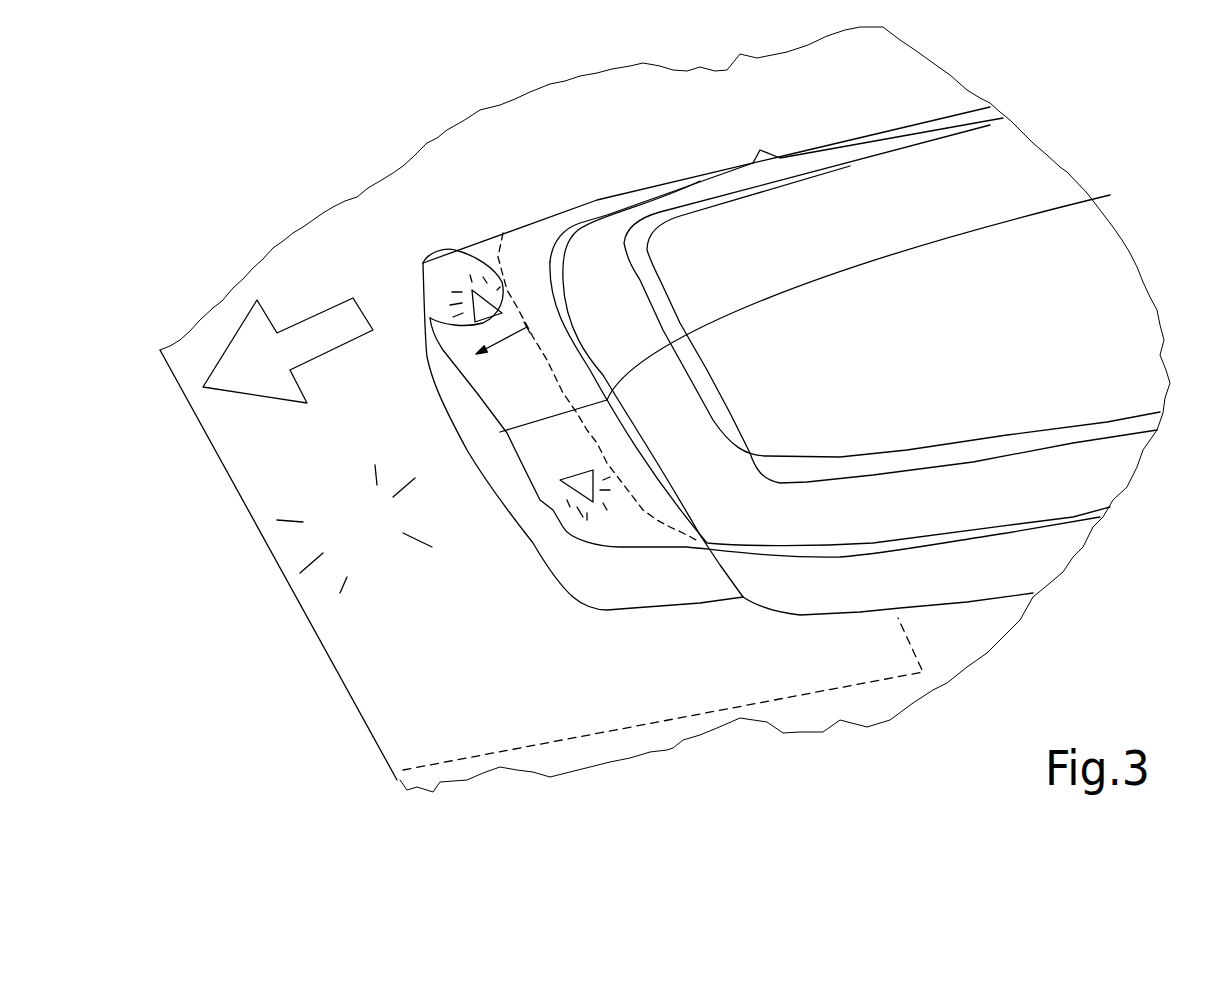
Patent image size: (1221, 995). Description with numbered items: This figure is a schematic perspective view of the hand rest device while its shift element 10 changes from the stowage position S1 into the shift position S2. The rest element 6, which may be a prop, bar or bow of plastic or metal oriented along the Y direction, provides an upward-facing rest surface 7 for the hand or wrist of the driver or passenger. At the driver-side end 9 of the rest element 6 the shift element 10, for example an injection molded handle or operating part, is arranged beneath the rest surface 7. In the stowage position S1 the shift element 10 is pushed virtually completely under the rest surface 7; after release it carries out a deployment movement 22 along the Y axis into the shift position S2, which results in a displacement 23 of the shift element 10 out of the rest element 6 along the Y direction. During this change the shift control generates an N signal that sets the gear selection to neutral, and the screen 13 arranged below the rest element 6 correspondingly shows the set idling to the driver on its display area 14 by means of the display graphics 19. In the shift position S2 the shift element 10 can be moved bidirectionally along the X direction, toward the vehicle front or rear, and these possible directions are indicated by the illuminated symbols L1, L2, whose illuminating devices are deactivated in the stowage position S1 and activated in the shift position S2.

The rest element 6 is at (887, 548).
The rest surface 7 is at (1101, 308).
The driver-side end 9 is at (798, 228).
The shift element 10 is at (633, 612).
The screen 13 is at (793, 697).
The display area 14 is at (413, 750).
The display graphics 19 is at (365, 633).
The deployment movement 22 is at (297, 322).
The displacement 23 is at (523, 345).
The illuminated symbol L1 is at (433, 322).
The illuminated symbol L2 is at (563, 488).
The stowage position S1 is at (504, 281).
The shift position S2 is at (420, 277).